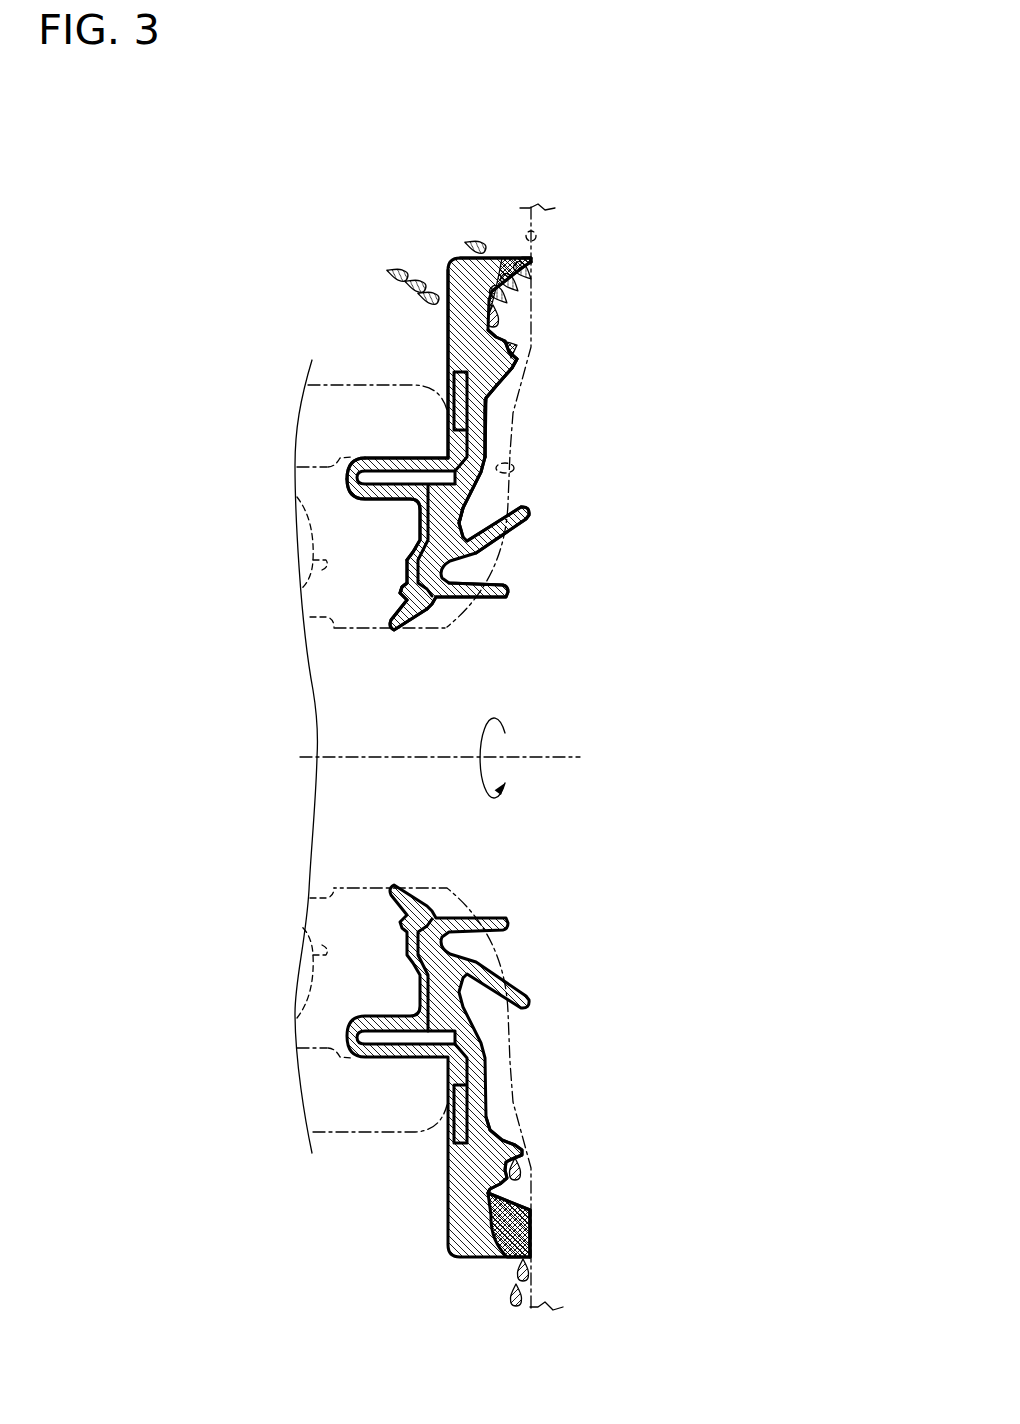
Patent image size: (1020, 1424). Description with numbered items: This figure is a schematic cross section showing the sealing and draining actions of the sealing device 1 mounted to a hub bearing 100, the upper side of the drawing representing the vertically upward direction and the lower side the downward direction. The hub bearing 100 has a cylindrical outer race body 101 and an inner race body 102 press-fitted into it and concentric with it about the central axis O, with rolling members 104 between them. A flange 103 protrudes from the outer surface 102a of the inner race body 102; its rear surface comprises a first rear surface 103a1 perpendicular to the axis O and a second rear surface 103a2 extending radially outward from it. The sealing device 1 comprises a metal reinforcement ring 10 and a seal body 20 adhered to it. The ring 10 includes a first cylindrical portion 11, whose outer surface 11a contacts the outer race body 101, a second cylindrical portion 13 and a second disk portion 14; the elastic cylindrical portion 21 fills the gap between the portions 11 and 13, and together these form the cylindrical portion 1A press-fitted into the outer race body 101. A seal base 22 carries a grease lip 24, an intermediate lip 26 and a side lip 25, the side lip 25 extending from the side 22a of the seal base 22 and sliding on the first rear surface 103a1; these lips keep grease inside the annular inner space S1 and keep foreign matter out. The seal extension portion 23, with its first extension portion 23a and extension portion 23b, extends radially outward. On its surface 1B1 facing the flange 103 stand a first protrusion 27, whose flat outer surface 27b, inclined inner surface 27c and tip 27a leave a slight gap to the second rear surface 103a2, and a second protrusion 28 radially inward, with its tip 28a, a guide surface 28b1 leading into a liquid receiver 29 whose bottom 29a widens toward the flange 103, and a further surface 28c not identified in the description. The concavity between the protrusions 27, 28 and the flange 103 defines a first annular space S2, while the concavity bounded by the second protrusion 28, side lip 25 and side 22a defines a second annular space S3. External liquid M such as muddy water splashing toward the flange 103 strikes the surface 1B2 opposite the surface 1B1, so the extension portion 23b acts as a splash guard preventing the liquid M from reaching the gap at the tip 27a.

The sealing device 1 is at (238, 188).
The hub bearing 100 is at (242, 338).
The outer race body 101 is at (318, 403).
The inner race body 102 is at (325, 683).
The outer surface of the inner race body 102a is at (310, 617).
The flange 103 is at (562, 218).
The first rear surface 103a1 is at (520, 466).
The second rear surface 103a2 is at (537, 233).
The rolling members 104 is at (307, 572).
The central axis O is at (545, 757).
The cylindrical portion 1A is at (226, 433).
The reinforcement ring 10 is at (405, 532).
The first cylindrical portion 11 is at (350, 458).
The outer surface of the first cylindrical portion 11a is at (385, 457).
The second cylindrical portion 13 is at (404, 526).
The second disk portion 14 is at (400, 580).
The elastic cylindrical portion 21 is at (348, 475).
The seal body 20 is at (432, 260).
The seal extension portion 23 is at (458, 268).
The first extension portion 23a is at (483, 442).
The extension portion 23b is at (447, 315).
The surface of the extension portion facing the flange 1B1 is at (487, 418).
The surface opposite the surface facing the flange 1B2 is at (455, 371).
The seal base 22 is at (507, 580).
The side of the seal base 22a is at (531, 528).
The grease lip 24 is at (400, 632).
The side lip 25 is at (510, 522).
The intermediate lip 26 is at (500, 598).
The first protrusion 27 is at (508, 258).
The tip of the first protrusion 27a is at (533, 258).
The outer surface of the first protrusion 27b is at (492, 256).
The inner surface of the first protrusion 27c is at (525, 292).
The second protrusion 28 is at (530, 350).
The tip of the second protrusion 28a is at (515, 380).
The guide surface 28b1 is at (505, 323).
The projection root surface 28c is at (510, 386).
The liquid receiver 29 is at (524, 335).
The bottom of the liquid receiver 29a is at (506, 348).
The annular inner space S1 is at (387, 610).
The first annular space S2 is at (520, 300).
The second annular space S3 is at (505, 489).
The external liquid M is at (392, 273).